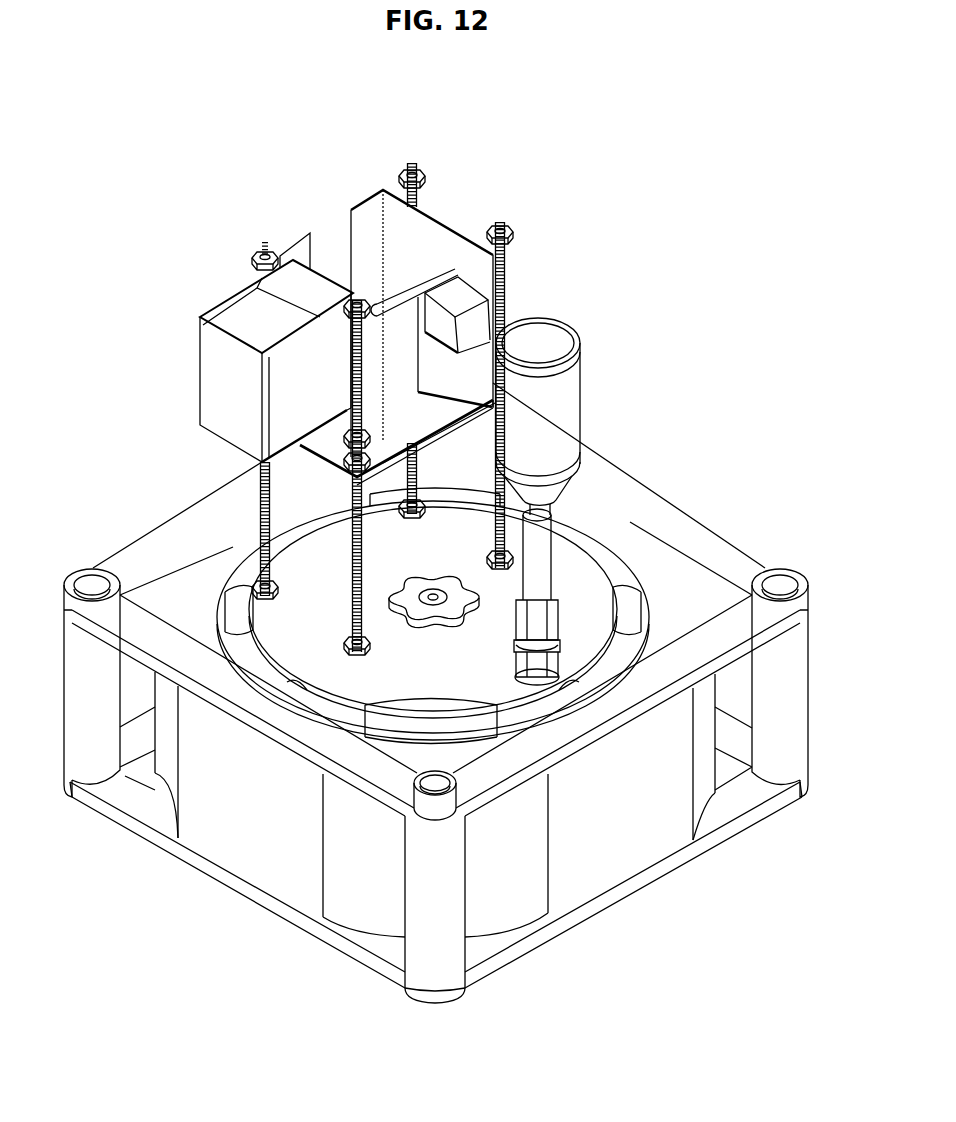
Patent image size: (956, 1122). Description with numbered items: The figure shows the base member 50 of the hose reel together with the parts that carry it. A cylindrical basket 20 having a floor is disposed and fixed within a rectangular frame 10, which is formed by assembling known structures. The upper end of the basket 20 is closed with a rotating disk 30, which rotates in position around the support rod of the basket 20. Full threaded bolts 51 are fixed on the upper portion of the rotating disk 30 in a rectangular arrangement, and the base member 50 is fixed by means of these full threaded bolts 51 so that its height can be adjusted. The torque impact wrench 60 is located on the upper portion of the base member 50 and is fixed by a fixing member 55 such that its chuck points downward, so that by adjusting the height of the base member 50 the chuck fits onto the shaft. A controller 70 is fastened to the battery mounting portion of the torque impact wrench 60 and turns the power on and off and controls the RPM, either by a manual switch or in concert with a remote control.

The rectangular frame 10 is at (662, 515).
The basket 20 is at (680, 590).
The rotating disk 30 is at (585, 573).
The base member 50 is at (315, 440).
The full threaded bolts 51 is at (258, 500).
The fixing member 55 is at (309, 233).
The torque impact wrench 60 is at (563, 400).
The controller 70 is at (455, 215).